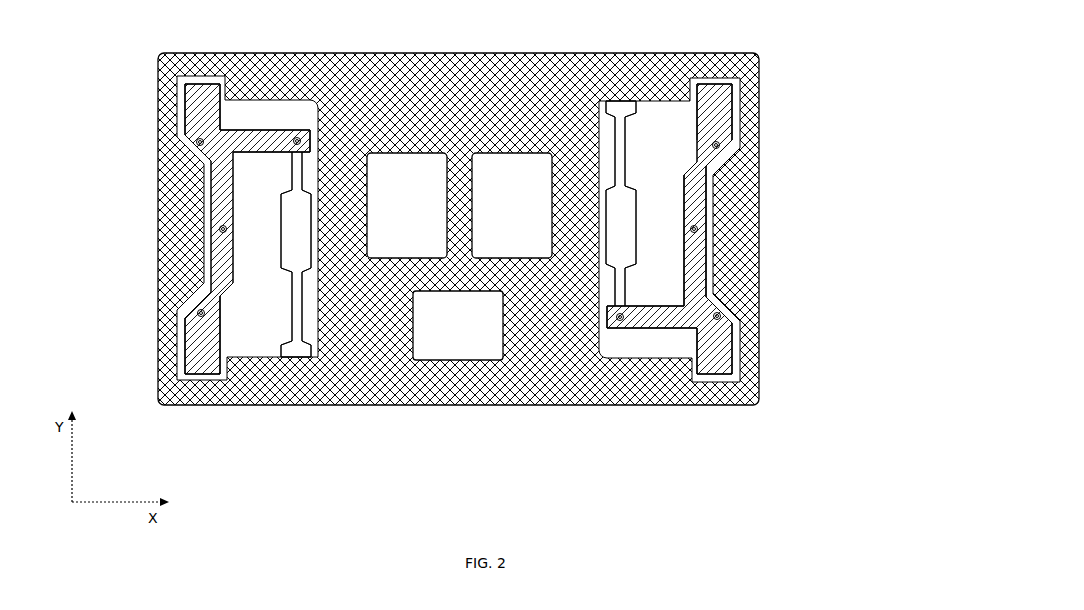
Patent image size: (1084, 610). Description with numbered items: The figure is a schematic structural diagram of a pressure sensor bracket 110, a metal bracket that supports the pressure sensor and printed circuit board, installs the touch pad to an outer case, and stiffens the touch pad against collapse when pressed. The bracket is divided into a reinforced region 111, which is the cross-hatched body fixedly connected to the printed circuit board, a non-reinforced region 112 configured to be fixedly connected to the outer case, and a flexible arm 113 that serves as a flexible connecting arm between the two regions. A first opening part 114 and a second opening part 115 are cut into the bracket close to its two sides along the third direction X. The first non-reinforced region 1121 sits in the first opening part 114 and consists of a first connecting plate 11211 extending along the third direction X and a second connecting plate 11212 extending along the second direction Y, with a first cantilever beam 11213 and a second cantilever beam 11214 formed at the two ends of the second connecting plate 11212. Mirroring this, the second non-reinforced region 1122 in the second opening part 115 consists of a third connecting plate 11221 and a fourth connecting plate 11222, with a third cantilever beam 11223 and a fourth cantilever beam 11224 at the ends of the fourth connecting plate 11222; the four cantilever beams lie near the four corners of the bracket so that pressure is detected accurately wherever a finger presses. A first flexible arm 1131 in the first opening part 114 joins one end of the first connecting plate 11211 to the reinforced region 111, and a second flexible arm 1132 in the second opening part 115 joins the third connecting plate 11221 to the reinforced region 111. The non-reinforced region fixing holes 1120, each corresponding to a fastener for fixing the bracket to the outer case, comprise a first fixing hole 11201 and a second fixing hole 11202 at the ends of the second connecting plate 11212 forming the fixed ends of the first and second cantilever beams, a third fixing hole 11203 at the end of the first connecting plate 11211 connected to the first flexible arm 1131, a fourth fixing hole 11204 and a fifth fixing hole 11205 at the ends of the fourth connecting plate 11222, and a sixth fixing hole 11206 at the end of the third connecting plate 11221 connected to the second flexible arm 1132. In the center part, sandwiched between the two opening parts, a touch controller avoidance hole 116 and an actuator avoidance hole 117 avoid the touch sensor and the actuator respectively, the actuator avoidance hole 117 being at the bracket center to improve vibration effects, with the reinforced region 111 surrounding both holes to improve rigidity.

The pressure sensor bracket 110 is at (736, 273).
The reinforced region 111 is at (422, 110).
The non-reinforced region 112 is at (902, 77).
The flexible arm 113 is at (902, 168).
The first opening part 114 is at (247, 320).
The second opening part 115 is at (658, 155).
The touch controller avoidance hole 116 is at (524, 195).
The actuator avoidance hole 117 is at (455, 338).
The non-reinforced region fixing holes 1120 is at (697, 231).
The first non-reinforced region 1121 is at (222, 186).
The second non-reinforced region 1122 is at (690, 283).
The first flexible arm 1131 is at (298, 322).
The second flexible arm 1132 is at (623, 107).
The first fixing hole 11201 is at (196, 140).
The second fixing hole 11202 is at (198, 311).
The third fixing hole 11203 is at (296, 137).
The fourth fixing hole 11204 is at (719, 145).
The fifth fixing hole 11205 is at (720, 316).
The sixth fixing hole 11206 is at (622, 320).
The first connecting plate 11211 is at (263, 140).
The second connecting plate 11212 is at (225, 247).
The first cantilever beam 11213 is at (208, 102).
The second cantilever beam 11214 is at (197, 348).
The third connecting plate 11221 is at (643, 320).
The fourth connecting plate 11222 is at (690, 187).
The third cantilever beam 11223 is at (720, 103).
The fourth cantilever beam 11224 is at (717, 352).